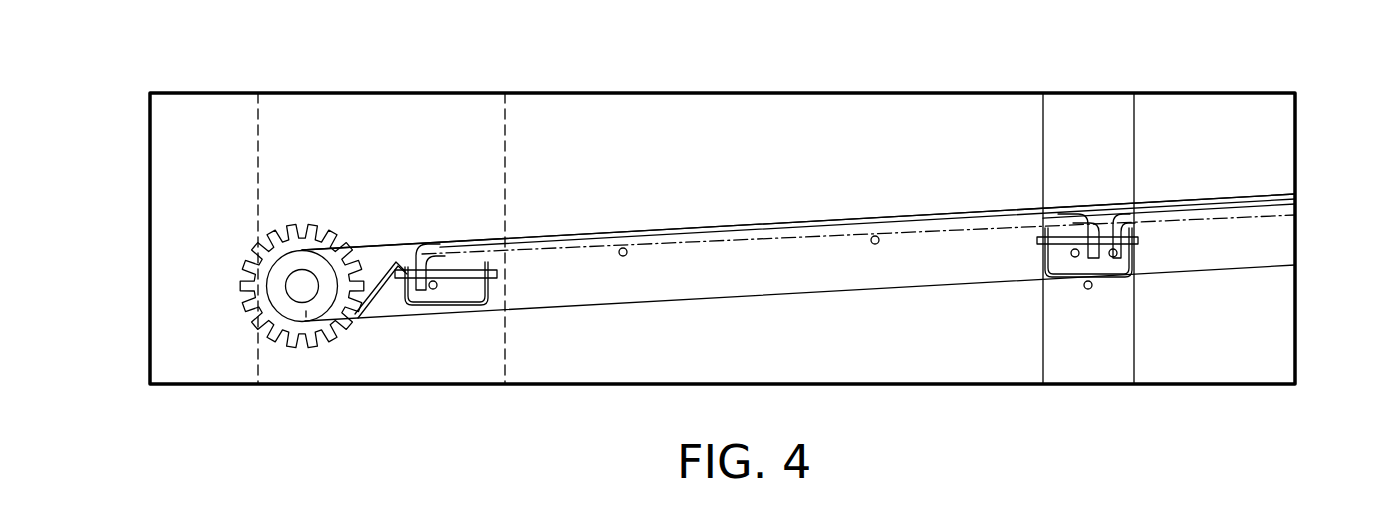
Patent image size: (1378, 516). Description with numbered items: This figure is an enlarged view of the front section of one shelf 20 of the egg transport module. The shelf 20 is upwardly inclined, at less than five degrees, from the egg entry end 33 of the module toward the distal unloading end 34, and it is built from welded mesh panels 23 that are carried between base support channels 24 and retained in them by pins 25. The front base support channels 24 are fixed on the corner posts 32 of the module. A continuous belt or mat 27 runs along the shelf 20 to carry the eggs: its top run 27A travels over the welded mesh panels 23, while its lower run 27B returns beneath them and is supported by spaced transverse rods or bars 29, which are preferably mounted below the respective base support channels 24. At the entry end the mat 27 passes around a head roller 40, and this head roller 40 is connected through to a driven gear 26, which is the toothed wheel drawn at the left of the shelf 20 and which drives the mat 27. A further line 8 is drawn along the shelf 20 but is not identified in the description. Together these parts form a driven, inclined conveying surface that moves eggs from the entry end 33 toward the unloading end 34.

The egg entry end 33 is at (146, 139).
The corner post 32 is at (257, 88).
The driven gear 26 is at (327, 225).
The head roller 40 is at (306, 313).
The shelf 20 is at (1233, 238).
The continuous belt or mat 27 is at (1003, 202).
The top run of mat 27A is at (1237, 193).
The lower run of mat 27B is at (1265, 275).
The guide line 8 is at (1185, 216).
The welded mesh panel 23 is at (770, 236).
The base support channel 24 is at (458, 313).
The pin 25 is at (448, 268).
The transverse rod or bar 29 is at (1088, 290).
The distal unloading end 34 is at (1281, 515).